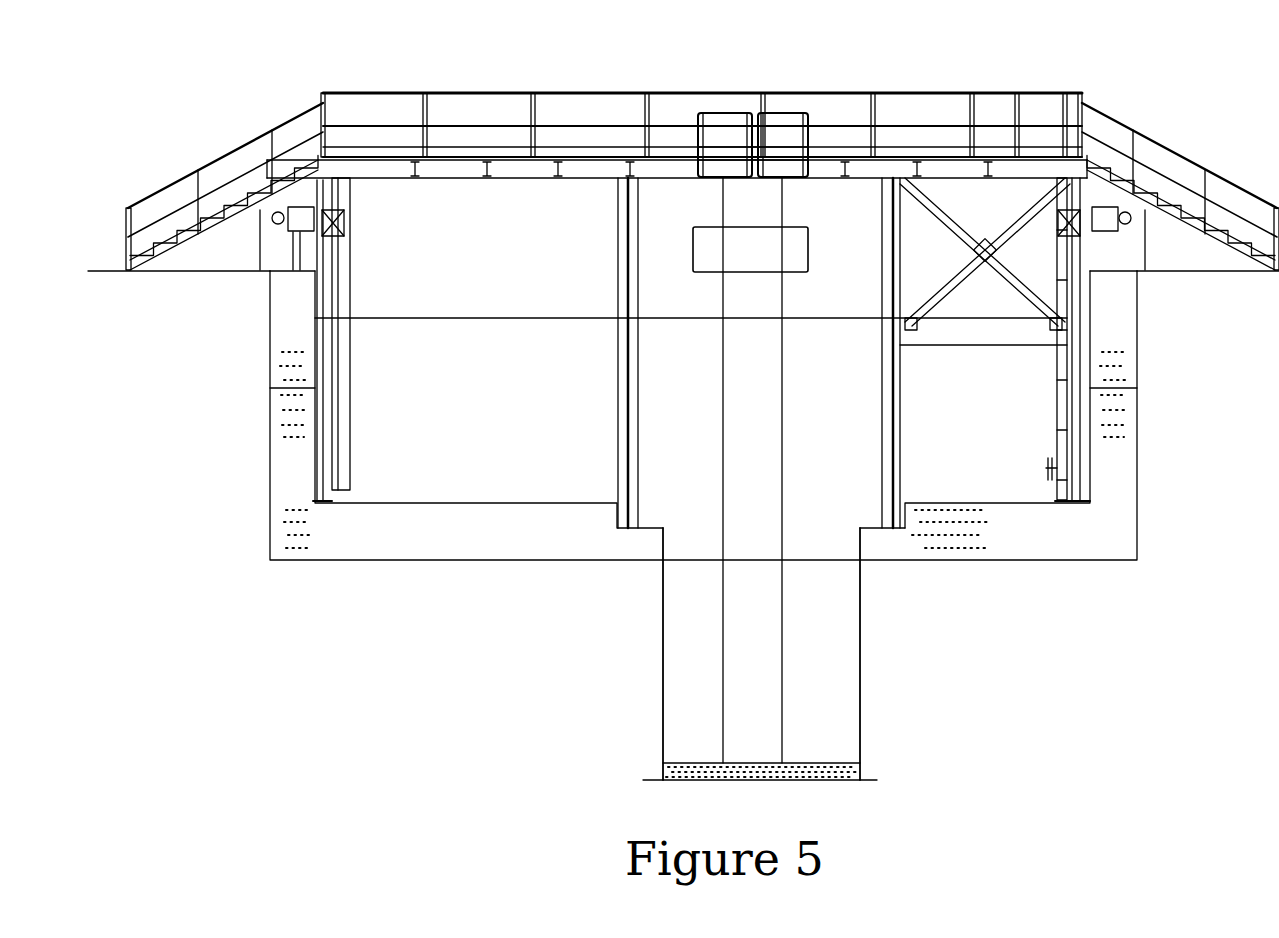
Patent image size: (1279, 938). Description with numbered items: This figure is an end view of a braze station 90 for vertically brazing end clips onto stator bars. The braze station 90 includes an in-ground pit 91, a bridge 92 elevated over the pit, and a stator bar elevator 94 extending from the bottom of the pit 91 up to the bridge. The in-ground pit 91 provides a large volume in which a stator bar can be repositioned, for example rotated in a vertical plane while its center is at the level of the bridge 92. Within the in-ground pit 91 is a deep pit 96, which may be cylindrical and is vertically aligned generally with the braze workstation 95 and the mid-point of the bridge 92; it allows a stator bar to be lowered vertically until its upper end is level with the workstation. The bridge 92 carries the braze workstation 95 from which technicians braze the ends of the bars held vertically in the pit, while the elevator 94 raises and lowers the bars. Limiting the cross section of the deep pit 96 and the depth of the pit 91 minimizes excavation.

The braze station 90 is at (586, 625).
The pit 91 is at (270, 452).
The bridge 92 is at (483, 93).
The stator bar elevator 94 is at (703, 250).
The braze workstation 95 is at (727, 113).
The deep pit 96 is at (860, 707).